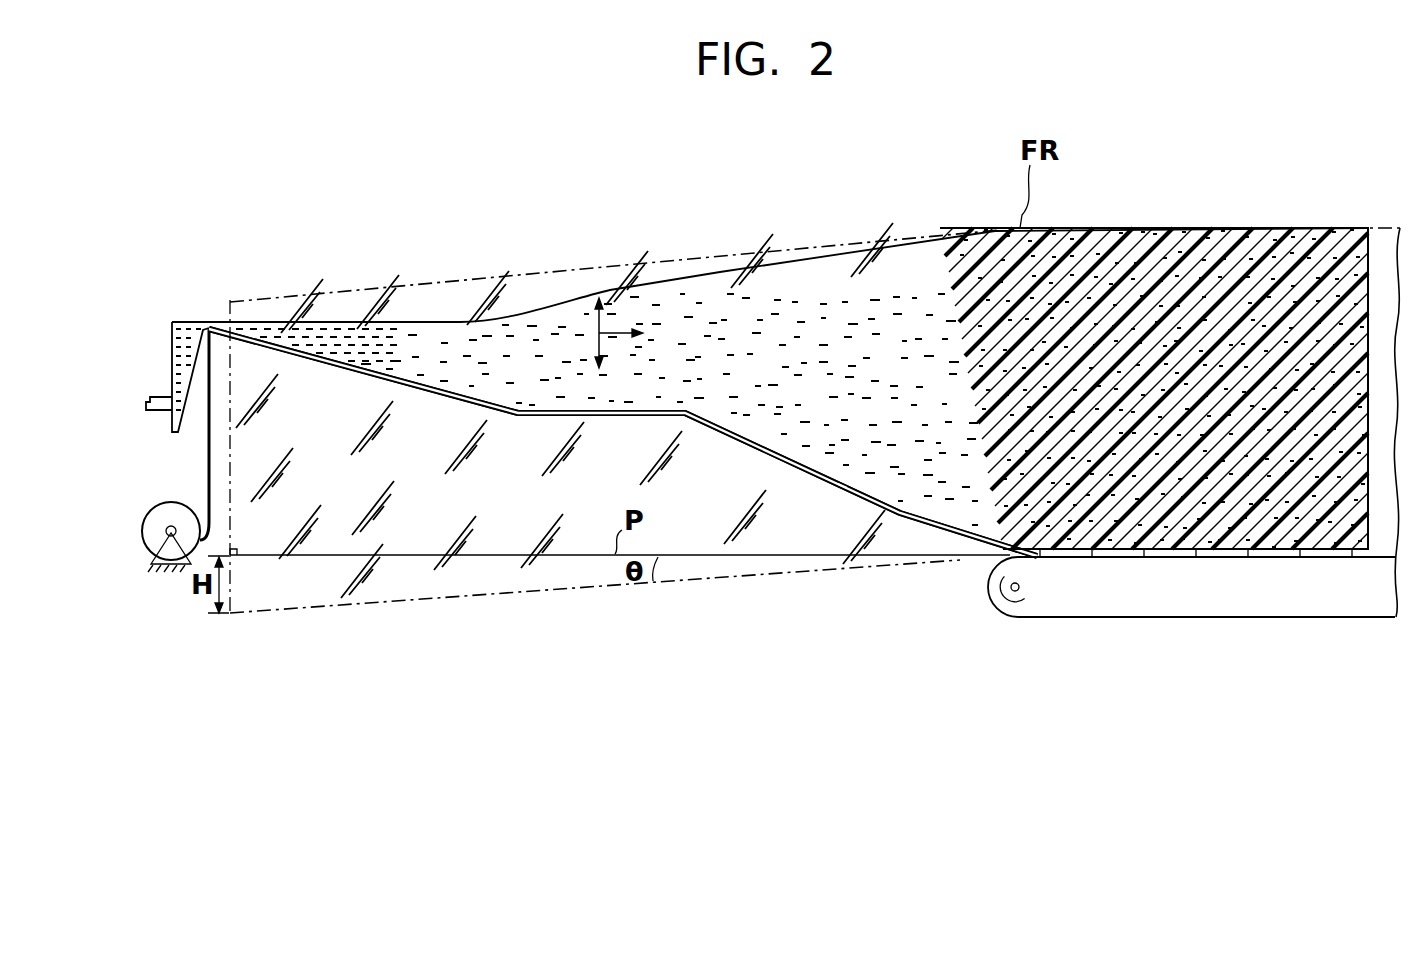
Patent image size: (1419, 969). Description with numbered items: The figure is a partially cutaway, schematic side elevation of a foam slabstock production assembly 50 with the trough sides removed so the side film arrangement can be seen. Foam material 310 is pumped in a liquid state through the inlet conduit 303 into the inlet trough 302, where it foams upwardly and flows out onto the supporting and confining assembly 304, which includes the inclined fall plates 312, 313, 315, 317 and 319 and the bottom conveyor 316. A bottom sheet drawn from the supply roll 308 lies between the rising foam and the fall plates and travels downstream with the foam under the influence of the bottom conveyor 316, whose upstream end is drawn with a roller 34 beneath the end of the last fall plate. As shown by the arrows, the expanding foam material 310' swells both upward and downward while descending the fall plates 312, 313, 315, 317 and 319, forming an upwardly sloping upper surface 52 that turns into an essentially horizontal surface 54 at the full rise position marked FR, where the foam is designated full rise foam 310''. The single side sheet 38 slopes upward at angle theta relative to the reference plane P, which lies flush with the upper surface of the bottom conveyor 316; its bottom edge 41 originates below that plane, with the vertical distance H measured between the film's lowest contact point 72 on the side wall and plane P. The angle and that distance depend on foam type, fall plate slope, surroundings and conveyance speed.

The inlet trough 302 is at (172, 340).
The foam material 310 is at (538, 409).
The inlet conduit 303 is at (160, 412).
The supply roll 308 is at (152, 548).
The single side sheet 38 is at (335, 482).
The fall plate 312 is at (428, 402).
The supporting and confining assembly 304 is at (545, 424).
The fall plate 313 is at (606, 418).
The fall plate 315 is at (752, 452).
The fall plate 317 is at (855, 494).
The fall plate 319 is at (970, 556).
The conveyor roller 34 is at (990, 604).
The bottom conveyor 316 is at (1062, 620).
The contact point 72 is at (230, 615).
The bottom edge 41 is at (368, 606).
The upper surface 52 is at (415, 320).
The foam slabstock production assembly 50 is at (688, 229).
The horizontal surface 54 is at (1308, 228).
The expanding foam material 310' is at (573, 300).
The full rise foam 310'' is at (1154, 339).